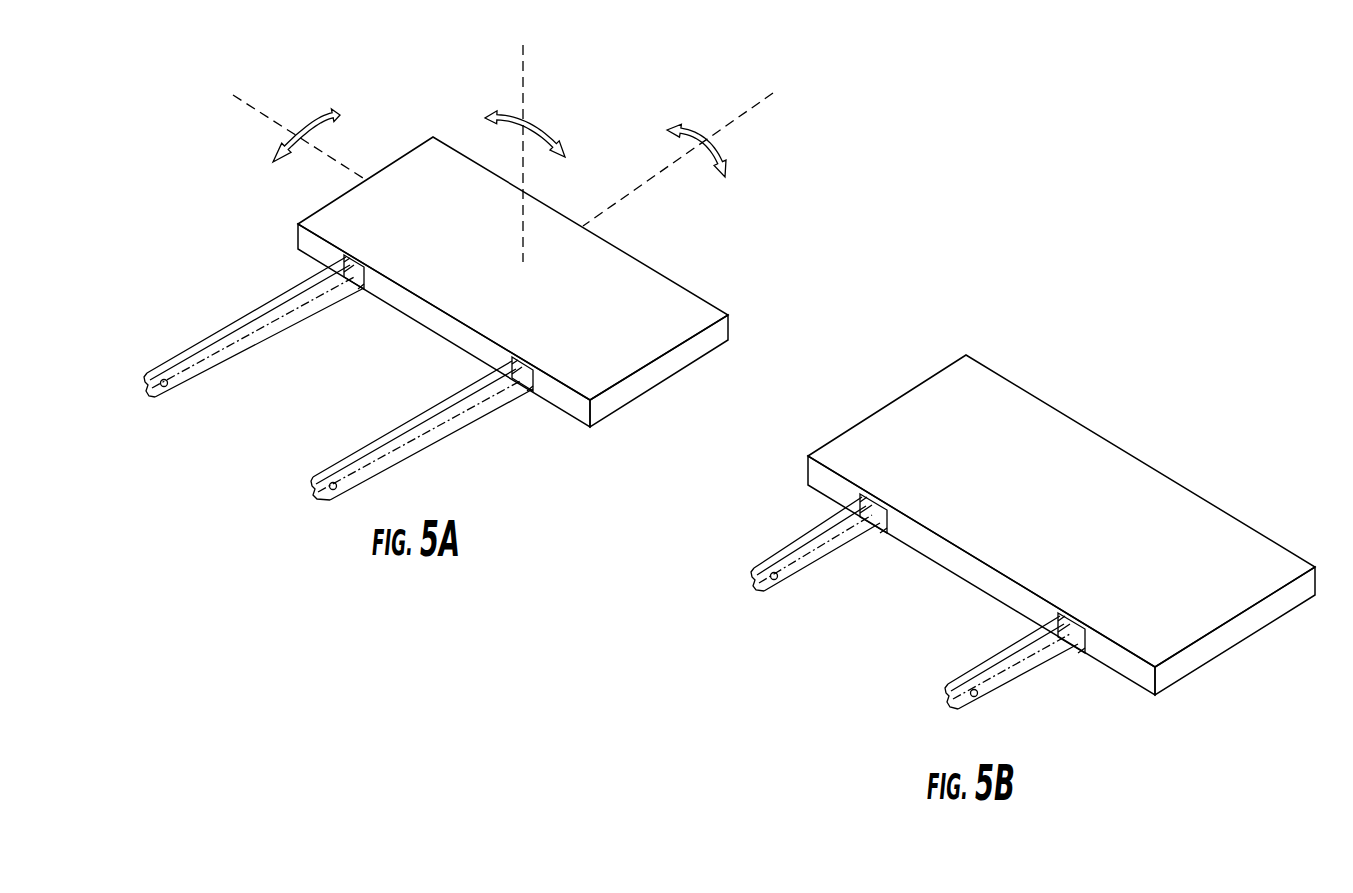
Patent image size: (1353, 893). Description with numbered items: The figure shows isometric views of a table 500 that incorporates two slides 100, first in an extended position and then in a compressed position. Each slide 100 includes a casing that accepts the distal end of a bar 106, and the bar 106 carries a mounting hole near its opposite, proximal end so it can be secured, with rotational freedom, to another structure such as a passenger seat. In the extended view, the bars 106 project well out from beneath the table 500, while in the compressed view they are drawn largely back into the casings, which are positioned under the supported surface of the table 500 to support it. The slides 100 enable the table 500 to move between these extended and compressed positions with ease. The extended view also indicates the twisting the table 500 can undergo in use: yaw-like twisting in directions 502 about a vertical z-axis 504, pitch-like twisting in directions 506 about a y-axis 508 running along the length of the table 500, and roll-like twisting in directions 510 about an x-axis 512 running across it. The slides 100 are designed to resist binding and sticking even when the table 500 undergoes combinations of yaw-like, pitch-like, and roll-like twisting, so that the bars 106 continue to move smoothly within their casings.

In FIG. 5A, the slide 100 is at (321, 372).
In FIG. 5B, the slide 100 is at (902, 608).
In FIG. 5A, the bar 106 is at (203, 338).
In FIG. 5B, the bar 106 is at (1014, 656).
In FIG. 5A, the table 500 is at (627, 293).
In FIG. 5B, the table 500 is at (1199, 538).
In FIG. 5A, the directions of yaw-like twisting 502 is at (532, 117).
In FIG. 5A, the z-axis 504 is at (518, 83).
In FIG. 5A, the directions of pitch-like twisting 506 is at (311, 116).
In FIG. 5A, the y-axis 508 is at (249, 106).
In FIG. 5A, the directions of roll-like twisting 510 is at (716, 157).
In FIG. 5A, the x-axis 512 is at (747, 112).